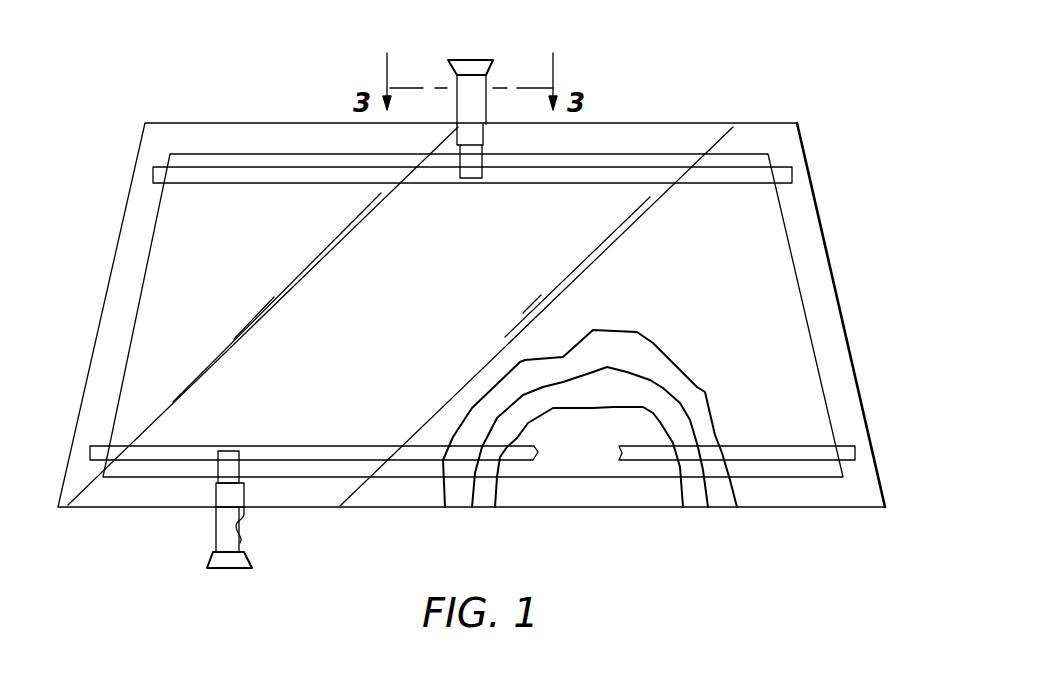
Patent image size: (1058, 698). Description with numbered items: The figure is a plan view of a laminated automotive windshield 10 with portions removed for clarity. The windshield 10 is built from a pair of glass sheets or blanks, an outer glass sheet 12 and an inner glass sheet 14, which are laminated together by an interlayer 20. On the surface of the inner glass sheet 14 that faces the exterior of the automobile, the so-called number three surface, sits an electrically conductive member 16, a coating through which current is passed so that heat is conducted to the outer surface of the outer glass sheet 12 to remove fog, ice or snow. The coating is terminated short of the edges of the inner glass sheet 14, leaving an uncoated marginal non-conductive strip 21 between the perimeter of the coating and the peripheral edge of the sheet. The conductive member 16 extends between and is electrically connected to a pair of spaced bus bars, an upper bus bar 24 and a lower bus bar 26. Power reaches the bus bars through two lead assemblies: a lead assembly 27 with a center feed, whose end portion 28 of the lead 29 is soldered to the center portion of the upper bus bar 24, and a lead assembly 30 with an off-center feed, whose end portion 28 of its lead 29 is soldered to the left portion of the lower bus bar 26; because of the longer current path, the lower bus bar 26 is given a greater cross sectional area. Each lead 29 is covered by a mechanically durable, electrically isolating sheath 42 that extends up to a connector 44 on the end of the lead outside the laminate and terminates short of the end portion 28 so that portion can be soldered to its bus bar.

The automotive windshield 10 is at (765, 104).
The outer glass sheet 12 is at (571, 484).
The inner glass sheet 14 is at (812, 251).
The electrically conductive member 16 is at (596, 360).
The interlayer 20 is at (595, 401).
The non-conductive strip 21 is at (277, 138).
The upper bus bar 24 is at (247, 184).
The lower bus bar 26 is at (527, 452).
The lead assembly 27 is at (493, 140).
The end portion of lead 28 is at (473, 176).
The lead 29 is at (482, 160).
The lead assembly 30 is at (210, 535).
The sheath 42 is at (460, 137).
The connector 44 is at (473, 60).